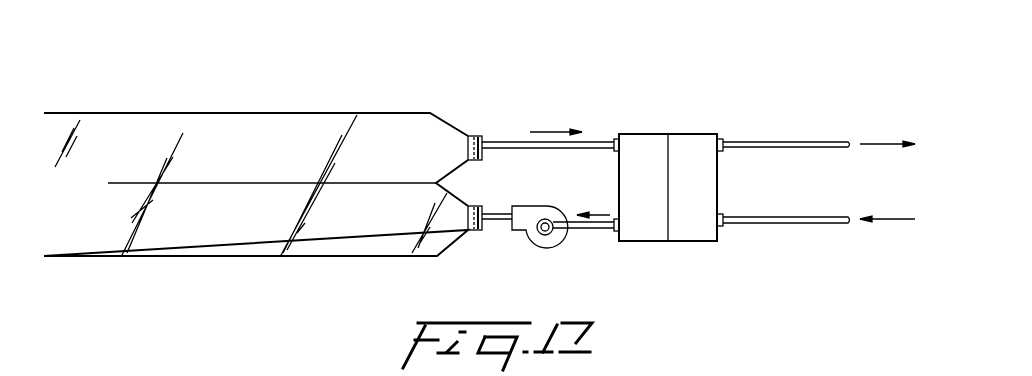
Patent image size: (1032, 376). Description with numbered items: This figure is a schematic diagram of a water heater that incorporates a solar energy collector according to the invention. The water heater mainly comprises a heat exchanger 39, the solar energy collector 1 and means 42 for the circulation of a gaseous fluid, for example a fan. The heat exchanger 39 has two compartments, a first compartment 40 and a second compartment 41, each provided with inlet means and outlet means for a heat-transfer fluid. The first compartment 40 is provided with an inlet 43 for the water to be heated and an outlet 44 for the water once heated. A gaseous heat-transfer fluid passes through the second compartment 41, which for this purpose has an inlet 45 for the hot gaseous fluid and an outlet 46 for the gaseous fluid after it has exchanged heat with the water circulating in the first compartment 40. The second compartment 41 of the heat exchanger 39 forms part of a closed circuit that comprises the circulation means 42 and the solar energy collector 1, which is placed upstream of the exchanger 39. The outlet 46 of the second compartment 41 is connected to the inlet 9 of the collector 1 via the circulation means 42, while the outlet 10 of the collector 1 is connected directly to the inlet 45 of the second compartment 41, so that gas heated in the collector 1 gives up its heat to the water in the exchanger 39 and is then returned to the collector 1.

The solar energy collector 1 is at (248, 112).
The inlet of the collector 9 is at (485, 233).
The outlet of the collector 10 is at (485, 135).
The heat exchanger 39 is at (685, 134).
The first compartment 40 is at (688, 225).
The second compartment 41 is at (645, 226).
The means for the circulation of the gaseous fluid 42 is at (547, 244).
The inlet for the water to be heated 43 is at (723, 228).
The outlet for the water when heated 44 is at (723, 140).
The inlet for the hot gaseous fluid 45 is at (614, 138).
The outlet for the gaseous fluid 46 is at (614, 231).